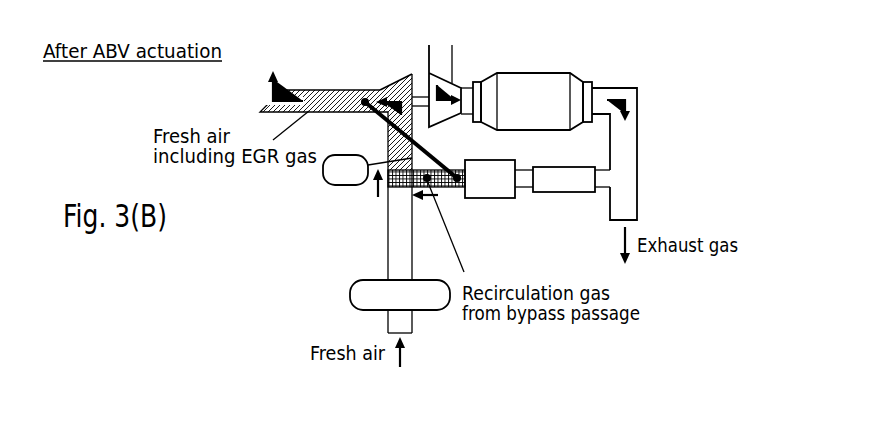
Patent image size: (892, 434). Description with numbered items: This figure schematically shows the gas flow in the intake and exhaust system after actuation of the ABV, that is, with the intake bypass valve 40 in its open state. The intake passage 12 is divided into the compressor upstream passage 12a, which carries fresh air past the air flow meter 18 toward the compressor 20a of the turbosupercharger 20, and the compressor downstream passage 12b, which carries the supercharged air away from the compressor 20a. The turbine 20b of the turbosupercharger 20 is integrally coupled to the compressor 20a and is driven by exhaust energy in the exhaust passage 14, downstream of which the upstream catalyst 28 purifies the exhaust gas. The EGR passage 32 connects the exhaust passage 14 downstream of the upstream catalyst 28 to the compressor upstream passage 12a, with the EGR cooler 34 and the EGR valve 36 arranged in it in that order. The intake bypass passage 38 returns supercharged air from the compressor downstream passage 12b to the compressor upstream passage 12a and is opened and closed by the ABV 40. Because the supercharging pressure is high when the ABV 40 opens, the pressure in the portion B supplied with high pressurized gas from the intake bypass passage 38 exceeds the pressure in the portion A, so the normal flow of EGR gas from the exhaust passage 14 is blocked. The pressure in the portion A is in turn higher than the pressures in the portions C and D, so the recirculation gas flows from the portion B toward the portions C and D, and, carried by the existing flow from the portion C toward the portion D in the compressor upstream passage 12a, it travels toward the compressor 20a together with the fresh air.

The intake passage 12 is at (312, 180).
The compressor upstream passage 12a is at (387, 264).
The compressor downstream passage 12b is at (330, 98).
The exhaust passage 14 is at (617, 88).
The air flow meter 18 is at (350, 297).
The turbosupercharger 20 is at (432, 63).
The compressor 20a is at (397, 76).
The turbine 20b is at (452, 65).
The upstream catalyst 28 is at (533, 73).
The exhaust gas recirculation passage 32 is at (603, 188).
The exhaust gas recirculation cooler 34 is at (571, 193).
The exhaust gas recirculation valve 36 is at (486, 199).
The intake bypass passage 38 is at (414, 141).
The intake bypass valve 40 is at (328, 181).
The portion A is at (524, 188).
The portion B is at (446, 192).
The portion C is at (387, 231).
The portion D is at (387, 140).